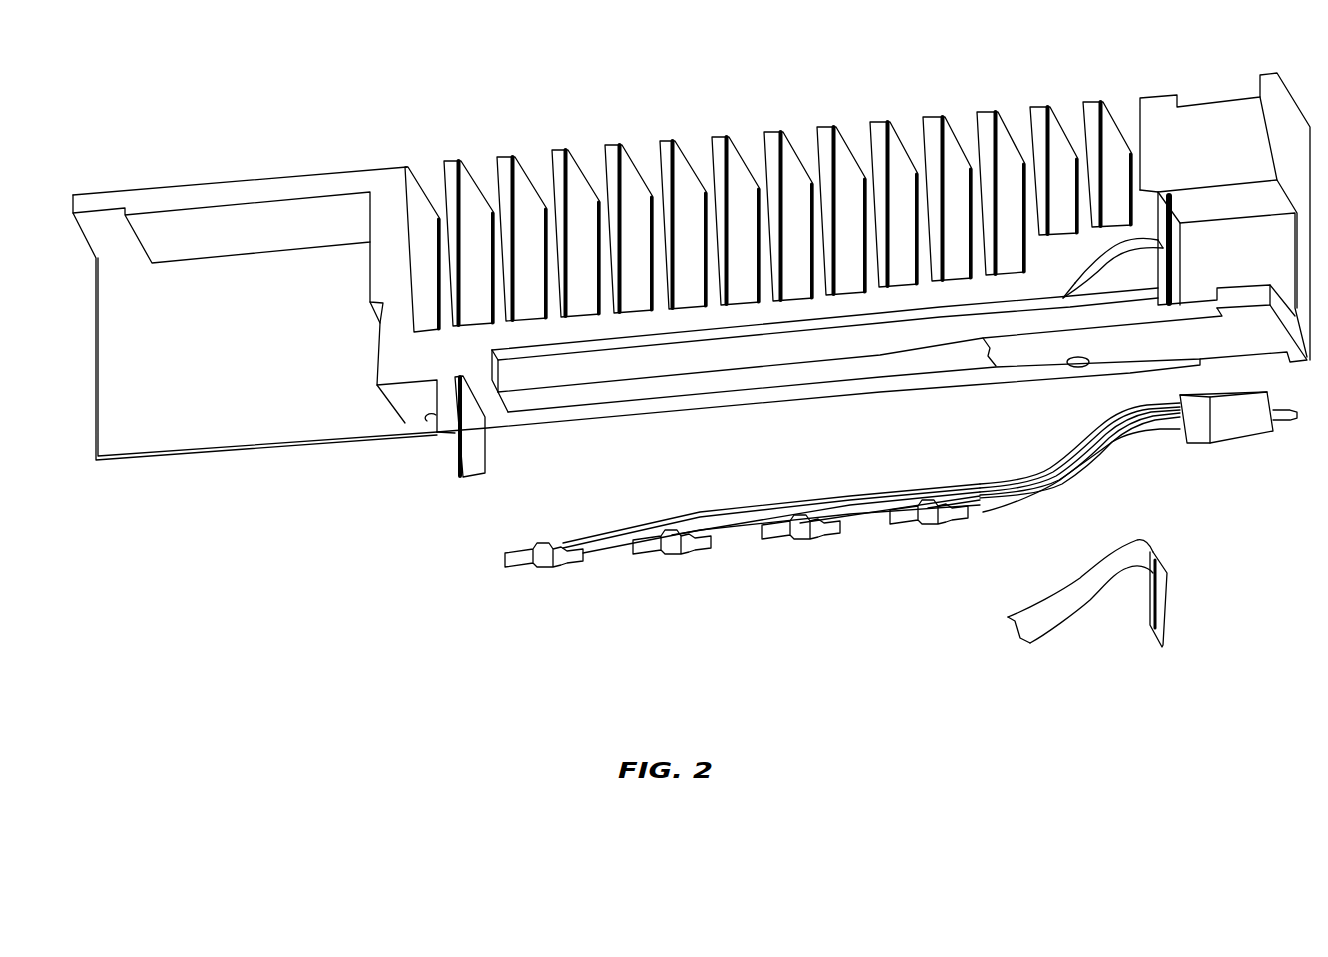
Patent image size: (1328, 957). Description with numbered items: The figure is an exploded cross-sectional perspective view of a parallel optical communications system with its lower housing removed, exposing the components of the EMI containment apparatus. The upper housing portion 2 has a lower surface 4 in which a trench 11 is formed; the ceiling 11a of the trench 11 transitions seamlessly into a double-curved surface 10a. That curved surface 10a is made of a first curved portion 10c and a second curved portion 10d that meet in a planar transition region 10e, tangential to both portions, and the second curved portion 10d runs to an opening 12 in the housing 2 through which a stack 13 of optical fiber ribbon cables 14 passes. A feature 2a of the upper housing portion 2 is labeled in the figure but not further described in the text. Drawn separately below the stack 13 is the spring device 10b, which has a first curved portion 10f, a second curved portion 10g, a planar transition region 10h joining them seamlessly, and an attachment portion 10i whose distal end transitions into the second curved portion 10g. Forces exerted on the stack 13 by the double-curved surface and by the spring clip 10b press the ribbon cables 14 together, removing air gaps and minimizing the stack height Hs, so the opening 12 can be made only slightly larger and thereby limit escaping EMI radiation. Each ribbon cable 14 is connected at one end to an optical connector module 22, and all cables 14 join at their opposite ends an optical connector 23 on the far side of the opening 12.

The upper housing portion 2 is at (691, 278).
The side surface of heat sink 2a is at (899, 401).
The lower surface 4 is at (412, 408).
The double-curved surface 10a is at (1125, 259).
The spring device 10b is at (1141, 531).
The first curved portion 10c is at (1072, 289).
The second curved portion 10d is at (1100, 258).
The transition region 10e is at (1083, 278).
The first curved portion 10f is at (1058, 598).
The second curved portion 10g is at (1113, 552).
The transition region 10h is at (1083, 578).
The attachment portion 10i is at (1162, 590).
The trench 11 is at (723, 350).
The ceiling 11a is at (628, 341).
The opening 12 is at (1158, 244).
The stack 13 is at (1090, 435).
The optical fiber ribbon cables 14 is at (1007, 487).
The optical connector module 22 is at (545, 558).
The optical connector 23 is at (1232, 395).
The height of the stack Hs is at (1152, 388).